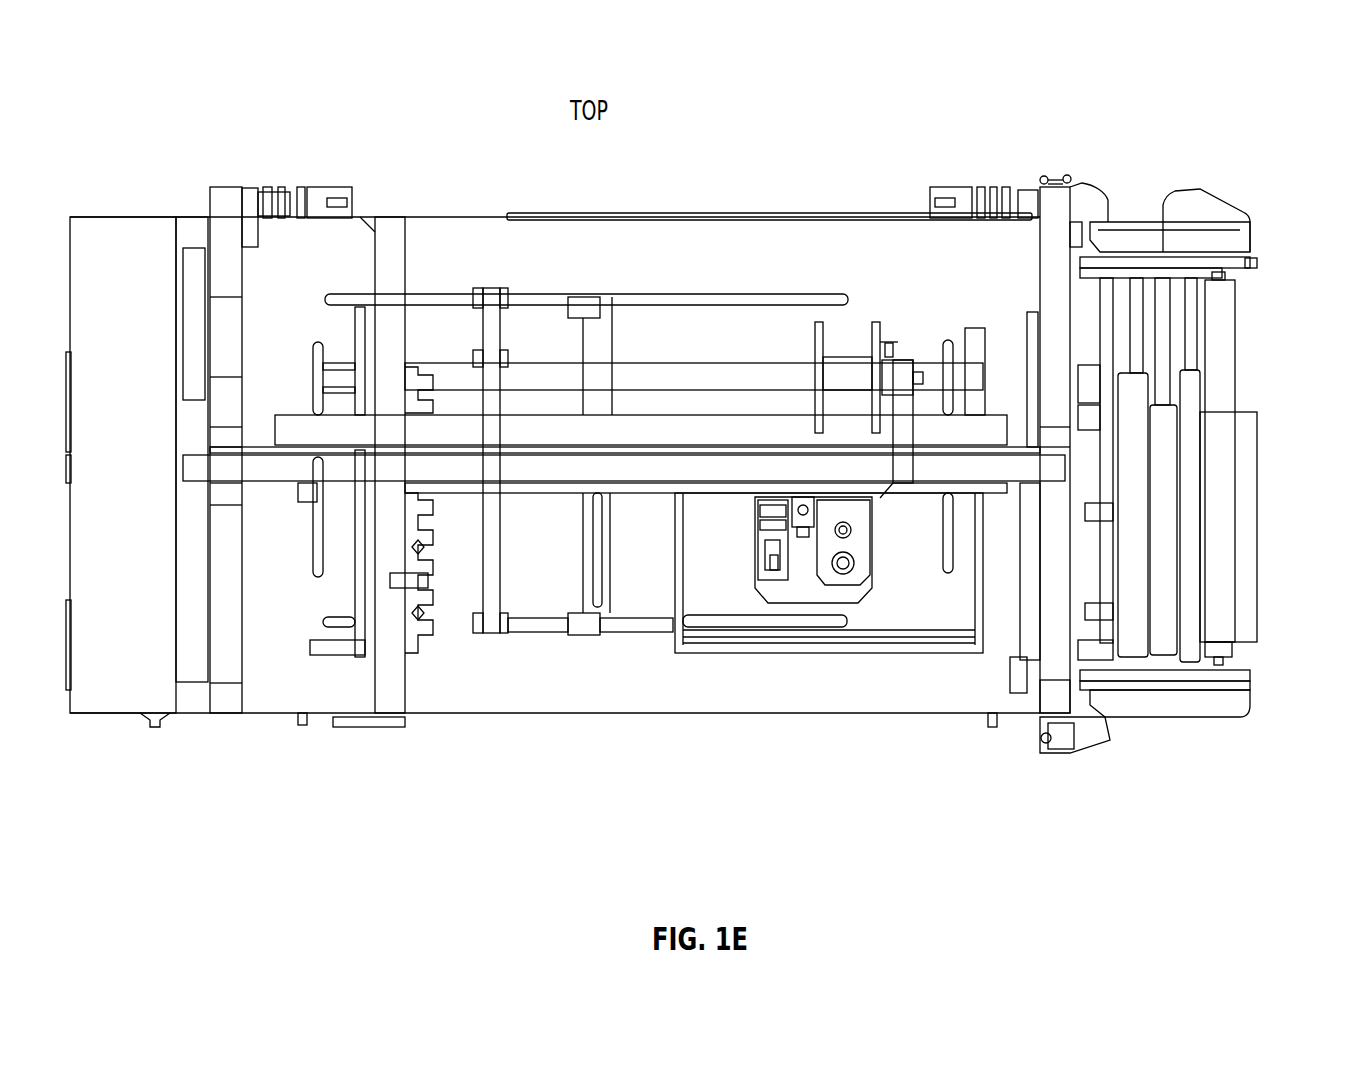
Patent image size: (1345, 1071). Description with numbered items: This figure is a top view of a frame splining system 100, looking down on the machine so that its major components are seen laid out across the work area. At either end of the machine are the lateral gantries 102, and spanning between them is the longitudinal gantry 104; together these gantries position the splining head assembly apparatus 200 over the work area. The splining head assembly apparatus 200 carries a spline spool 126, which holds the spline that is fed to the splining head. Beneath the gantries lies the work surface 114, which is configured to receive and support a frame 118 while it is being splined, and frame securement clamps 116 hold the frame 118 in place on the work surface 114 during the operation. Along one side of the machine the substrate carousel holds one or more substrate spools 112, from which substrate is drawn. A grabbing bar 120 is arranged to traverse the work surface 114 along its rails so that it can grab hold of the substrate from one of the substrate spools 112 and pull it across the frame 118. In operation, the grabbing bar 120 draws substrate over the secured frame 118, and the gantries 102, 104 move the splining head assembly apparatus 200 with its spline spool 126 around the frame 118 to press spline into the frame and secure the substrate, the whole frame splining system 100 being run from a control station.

The frame splining system 100 is at (1248, 78).
The lateral gantries 102 is at (225, 232).
The longitudinal gantry 104 is at (718, 470).
The substrate spools 112 is at (1243, 623).
The work surface 114 is at (735, 569).
The frame securement clamps 116 is at (662, 379).
The frame 118 is at (912, 640).
The grabbing bar 120 is at (428, 635).
The spline spool 126 is at (877, 333).
The splining head assembly apparatus 200 is at (872, 596).